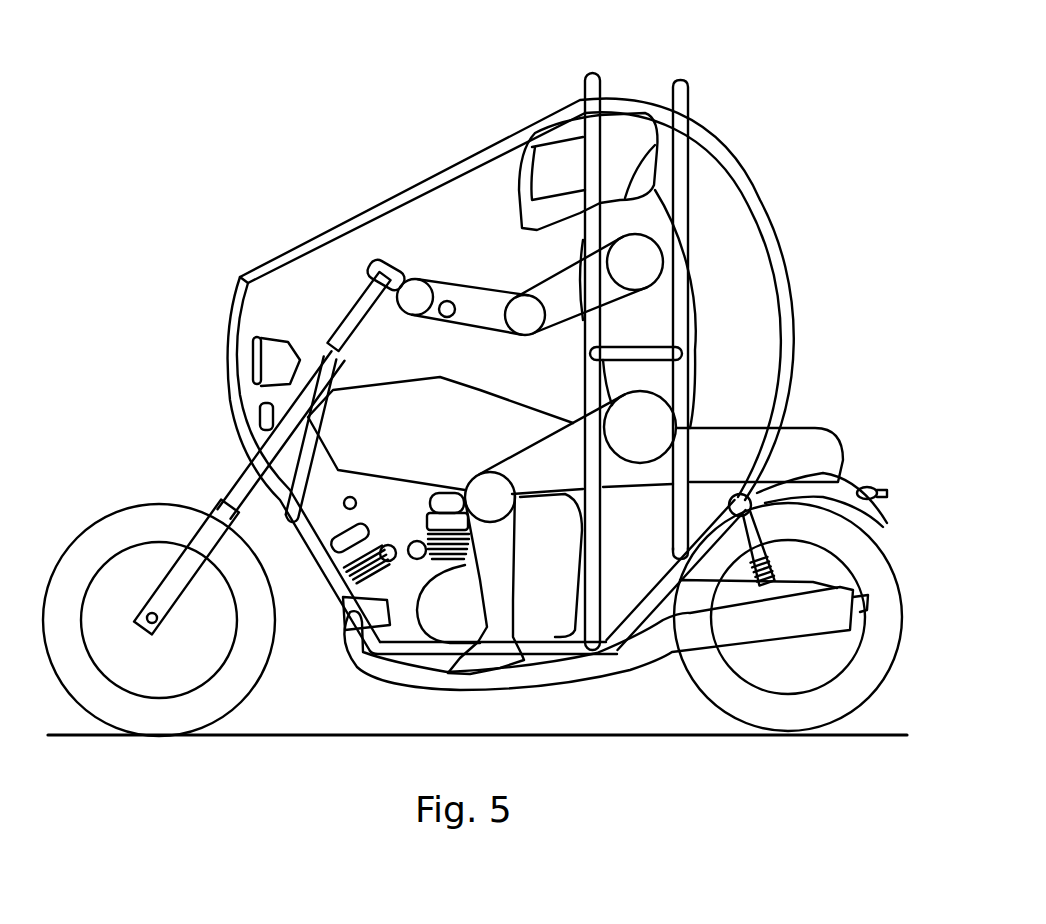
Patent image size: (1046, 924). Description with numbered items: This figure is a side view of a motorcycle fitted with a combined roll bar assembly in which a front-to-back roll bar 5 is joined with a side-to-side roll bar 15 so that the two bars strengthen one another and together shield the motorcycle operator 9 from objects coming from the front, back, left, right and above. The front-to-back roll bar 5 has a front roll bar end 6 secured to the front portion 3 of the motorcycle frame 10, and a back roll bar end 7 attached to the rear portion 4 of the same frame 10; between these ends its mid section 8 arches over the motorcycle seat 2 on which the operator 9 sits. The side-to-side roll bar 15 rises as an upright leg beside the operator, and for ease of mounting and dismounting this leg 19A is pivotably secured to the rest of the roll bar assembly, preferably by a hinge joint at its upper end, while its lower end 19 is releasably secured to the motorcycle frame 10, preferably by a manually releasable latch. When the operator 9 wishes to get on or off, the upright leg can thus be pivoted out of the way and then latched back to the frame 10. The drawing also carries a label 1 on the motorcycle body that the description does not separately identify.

The fuel tank 1 is at (402, 433).
The motorcycle seat 2 is at (733, 471).
The front portion of the motorcycle frame 3 is at (239, 492).
The rear portion of the motorcycle frame 4 is at (722, 575).
The front-to-back roll bar 5 is at (422, 406).
The front roll bar end 6 is at (305, 503).
The back roll bar end 7 is at (810, 504).
The mid section 8 is at (517, 299).
The motorcycle operator 9 is at (637, 335).
The motorcycle frame 10 is at (576, 633).
The side-to-side roll bar 15 is at (728, 289).
The roll-bar end 19 is at (648, 553).
The roll-bar leg 19A is at (582, 358).